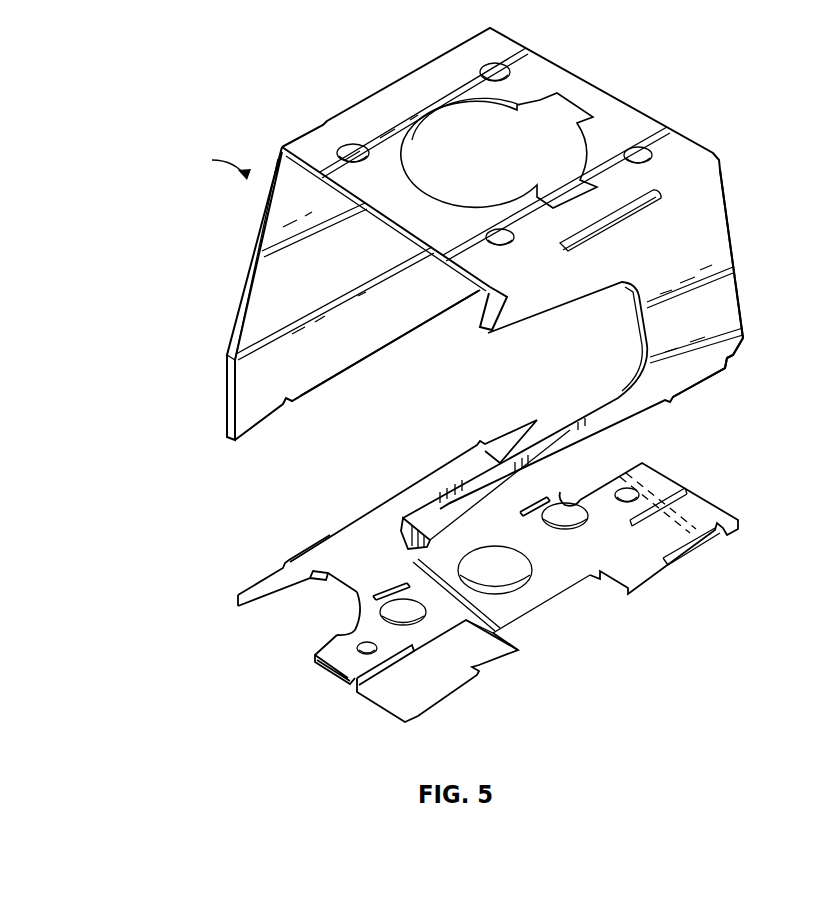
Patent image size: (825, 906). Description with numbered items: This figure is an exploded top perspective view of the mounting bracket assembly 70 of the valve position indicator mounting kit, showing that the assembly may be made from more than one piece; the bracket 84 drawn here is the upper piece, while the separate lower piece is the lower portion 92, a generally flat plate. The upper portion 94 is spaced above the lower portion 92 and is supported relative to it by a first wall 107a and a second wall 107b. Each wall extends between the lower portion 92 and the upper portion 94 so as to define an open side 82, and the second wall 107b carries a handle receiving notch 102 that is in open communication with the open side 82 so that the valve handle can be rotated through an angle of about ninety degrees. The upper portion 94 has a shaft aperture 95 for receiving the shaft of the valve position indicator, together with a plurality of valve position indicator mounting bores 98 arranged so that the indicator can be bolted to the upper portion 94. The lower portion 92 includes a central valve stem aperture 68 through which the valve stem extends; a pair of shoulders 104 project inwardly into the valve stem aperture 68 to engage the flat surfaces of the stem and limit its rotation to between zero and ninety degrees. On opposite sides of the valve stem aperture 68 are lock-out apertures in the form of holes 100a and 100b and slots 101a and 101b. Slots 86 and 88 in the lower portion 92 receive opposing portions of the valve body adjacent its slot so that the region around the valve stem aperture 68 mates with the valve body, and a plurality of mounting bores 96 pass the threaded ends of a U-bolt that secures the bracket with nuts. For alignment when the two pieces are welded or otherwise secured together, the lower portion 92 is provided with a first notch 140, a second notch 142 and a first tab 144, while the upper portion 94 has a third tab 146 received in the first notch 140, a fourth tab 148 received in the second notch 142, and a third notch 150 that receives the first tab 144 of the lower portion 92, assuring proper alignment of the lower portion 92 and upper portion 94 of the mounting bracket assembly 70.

The mounting bracket assembly 70 is at (213, 162).
The bracket 84 is at (483, 295).
The open side 82 is at (255, 392).
The upper portion 94 is at (742, 302).
The shaft aperture 95 is at (428, 188).
The valve position indicator mounting bores 98 is at (657, 153).
The handle receiving notch 102 is at (640, 327).
The first wall 107a is at (247, 263).
The second wall 107b is at (717, 203).
The fourth tab 148 is at (717, 380).
The third notch 150 is at (388, 343).
The first tab 144 is at (391, 493).
The third tab 146 is at (447, 497).
The valve stem aperture 68 is at (507, 558).
The slot 88 is at (507, 558).
The slot 86 is at (391, 560).
The lower portion 92 is at (712, 503).
The mounting bores 96 is at (317, 667).
The first notch 140 is at (450, 693).
The second notch 142 is at (697, 550).
The hole 100a is at (348, 622).
The hole 100b is at (563, 500).
The slot 101a is at (377, 593).
The slot 101b is at (533, 497).
The shoulders 104 is at (547, 570).